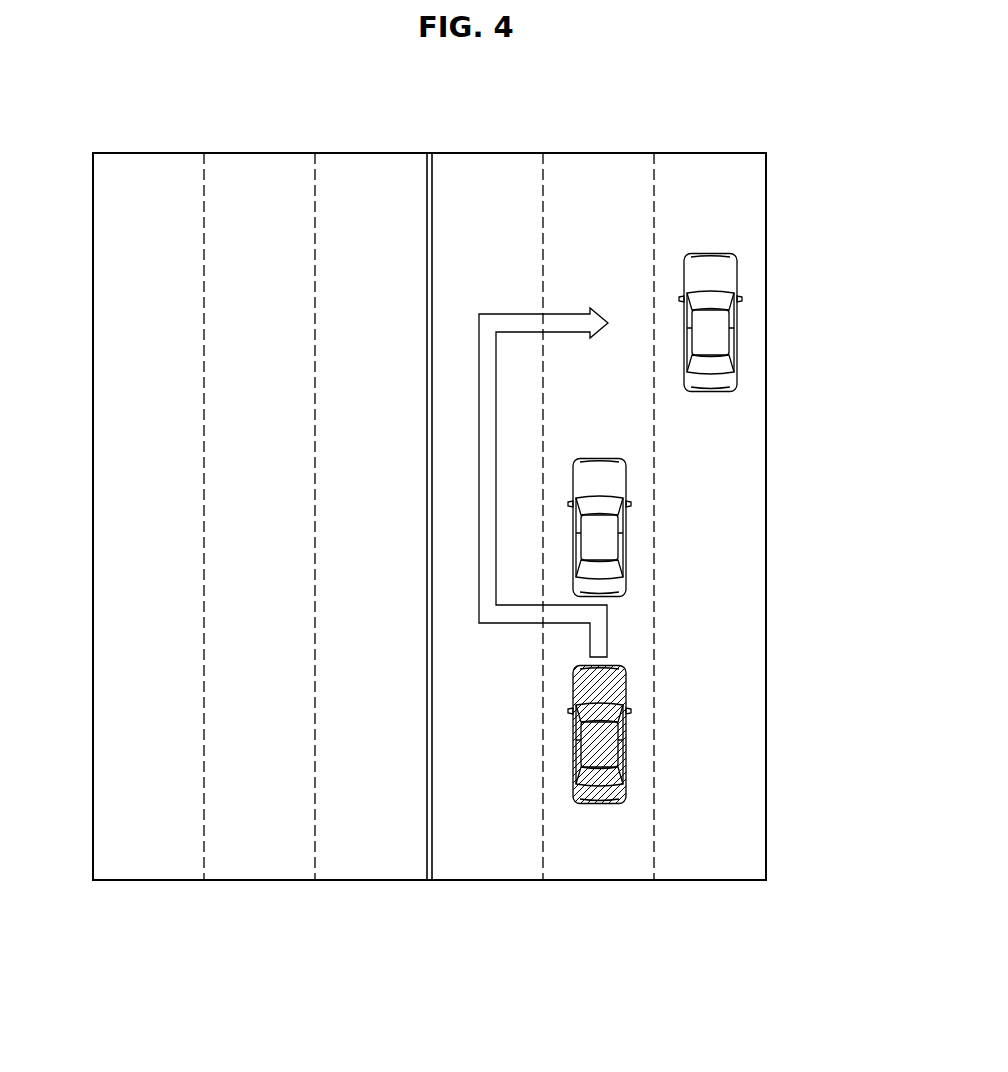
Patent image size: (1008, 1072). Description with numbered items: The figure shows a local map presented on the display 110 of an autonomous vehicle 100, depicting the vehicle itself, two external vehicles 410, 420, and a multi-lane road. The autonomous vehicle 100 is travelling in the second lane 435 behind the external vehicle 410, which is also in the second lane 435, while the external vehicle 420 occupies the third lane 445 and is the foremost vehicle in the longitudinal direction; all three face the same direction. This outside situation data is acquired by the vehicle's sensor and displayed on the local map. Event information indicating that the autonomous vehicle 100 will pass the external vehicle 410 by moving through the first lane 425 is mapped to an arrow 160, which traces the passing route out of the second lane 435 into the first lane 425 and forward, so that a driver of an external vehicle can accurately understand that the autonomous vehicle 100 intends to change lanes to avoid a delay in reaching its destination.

The display 110 is at (766, 153).
The arrow 160 is at (479, 623).
The autonomous vehicle 100 is at (598, 803).
The external vehicle 410 is at (627, 538).
The external vehicle 420 is at (738, 330).
The first lane 425 is at (490, 862).
The second lane 435 is at (640, 862).
The third lane 445 is at (710, 862).